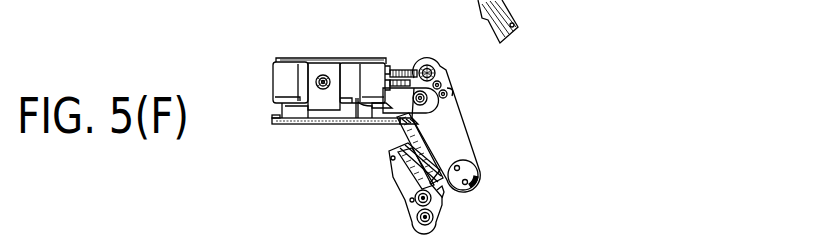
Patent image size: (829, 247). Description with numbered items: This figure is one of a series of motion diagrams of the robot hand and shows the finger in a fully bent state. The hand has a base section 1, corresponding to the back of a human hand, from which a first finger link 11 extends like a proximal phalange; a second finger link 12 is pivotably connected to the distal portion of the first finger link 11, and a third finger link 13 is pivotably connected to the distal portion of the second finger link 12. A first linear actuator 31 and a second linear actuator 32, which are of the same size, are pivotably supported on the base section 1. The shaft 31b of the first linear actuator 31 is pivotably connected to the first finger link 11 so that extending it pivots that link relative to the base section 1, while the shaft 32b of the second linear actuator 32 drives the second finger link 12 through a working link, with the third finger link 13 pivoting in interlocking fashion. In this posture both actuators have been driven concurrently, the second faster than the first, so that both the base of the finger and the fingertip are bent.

The base section 1 is at (318, 113).
The first finger link 11 is at (452, 137).
The second finger link 12 is at (455, 195).
The third finger link 13 is at (405, 188).
The first linear actuator 31 is at (280, 85).
The second linear actuator 32 is at (282, 63).
The shaft 31b is at (403, 70).
The shaft 32b is at (392, 72).